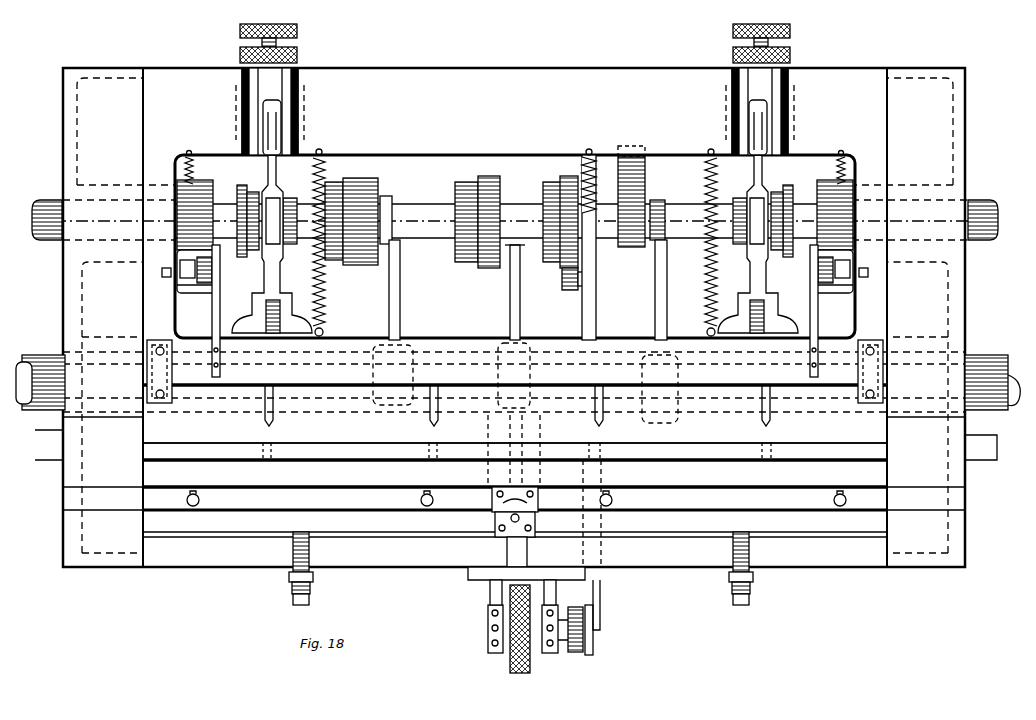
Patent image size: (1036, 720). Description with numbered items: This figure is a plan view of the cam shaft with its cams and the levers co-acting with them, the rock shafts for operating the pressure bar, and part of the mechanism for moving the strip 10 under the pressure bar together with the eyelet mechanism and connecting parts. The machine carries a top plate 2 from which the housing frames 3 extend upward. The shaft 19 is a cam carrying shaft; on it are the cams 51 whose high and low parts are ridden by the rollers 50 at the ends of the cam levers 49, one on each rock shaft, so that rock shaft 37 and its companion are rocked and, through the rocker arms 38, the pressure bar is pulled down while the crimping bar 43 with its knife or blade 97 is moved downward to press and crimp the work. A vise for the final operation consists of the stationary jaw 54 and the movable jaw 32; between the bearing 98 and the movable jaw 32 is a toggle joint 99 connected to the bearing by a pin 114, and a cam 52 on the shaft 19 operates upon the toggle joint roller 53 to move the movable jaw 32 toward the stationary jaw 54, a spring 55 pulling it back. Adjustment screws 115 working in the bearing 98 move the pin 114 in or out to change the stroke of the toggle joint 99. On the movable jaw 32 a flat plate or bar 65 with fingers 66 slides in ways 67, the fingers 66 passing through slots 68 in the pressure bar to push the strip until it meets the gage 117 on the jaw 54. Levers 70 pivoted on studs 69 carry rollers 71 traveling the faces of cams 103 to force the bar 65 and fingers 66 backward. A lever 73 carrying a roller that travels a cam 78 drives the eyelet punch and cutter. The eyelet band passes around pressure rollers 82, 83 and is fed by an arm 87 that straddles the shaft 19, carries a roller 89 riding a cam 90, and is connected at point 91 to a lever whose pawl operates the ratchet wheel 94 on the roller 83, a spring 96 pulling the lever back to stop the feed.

The top plate 2 is at (575, 68).
The housing frames 3 is at (78, 105).
The strip 10 is at (841, 168).
The shaft 19 is at (57, 202).
The movable jaw 32 is at (515, 430).
The rock shaft 37 is at (28, 368).
The rocker arms 38 is at (52, 355).
The crimping bar 43 is at (383, 470).
The cam levers 49 is at (400, 298).
The rollers 50 is at (372, 206).
The cams 51 is at (380, 188).
The cam 52 is at (250, 258).
The toggle joint roller 53 is at (288, 200).
The stationary jaw 54 is at (270, 526).
The spring 55 is at (320, 276).
The flat plate or bar 65 is at (349, 382).
The fingers 66 is at (268, 424).
The ways 67 is at (170, 334).
The slots 68 is at (263, 448).
The stud 69 is at (162, 273).
The levers 70 is at (186, 293).
The rollers 71 is at (218, 292).
The lever 73 is at (521, 316).
The cam 78 is at (492, 268).
The pressure roller 82 is at (530, 646).
The pressure roller 83 is at (520, 673).
The arm 87 is at (597, 310).
The roller 89 is at (573, 290).
The cam 90 is at (561, 178).
The point 91 is at (600, 612).
The ratchet wheel 94 is at (573, 652).
The spring 96 is at (594, 176).
The knife or blade 97 is at (305, 459).
The bearing 98 is at (300, 70).
The toggle joint 99 is at (270, 274).
The cams 103 is at (210, 187).
The pin 114 is at (277, 130).
The adjustment screws 115 is at (297, 32).
The gage 117 is at (235, 498).